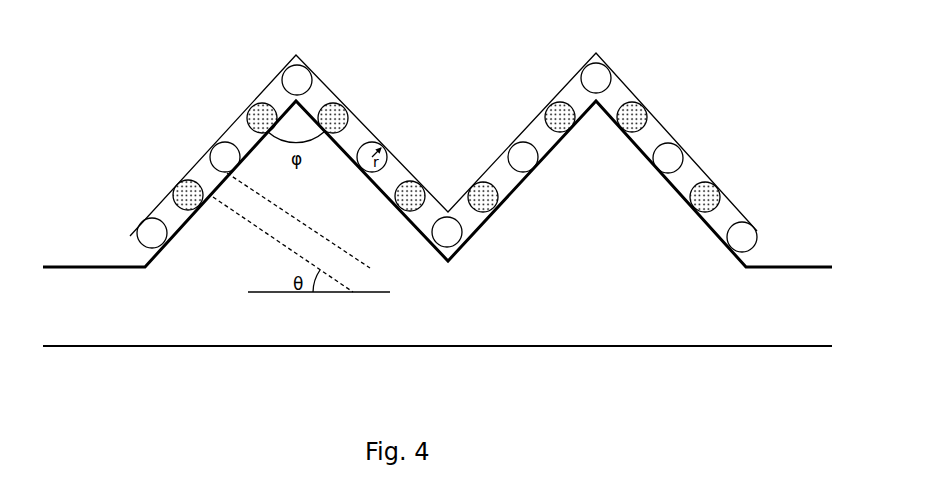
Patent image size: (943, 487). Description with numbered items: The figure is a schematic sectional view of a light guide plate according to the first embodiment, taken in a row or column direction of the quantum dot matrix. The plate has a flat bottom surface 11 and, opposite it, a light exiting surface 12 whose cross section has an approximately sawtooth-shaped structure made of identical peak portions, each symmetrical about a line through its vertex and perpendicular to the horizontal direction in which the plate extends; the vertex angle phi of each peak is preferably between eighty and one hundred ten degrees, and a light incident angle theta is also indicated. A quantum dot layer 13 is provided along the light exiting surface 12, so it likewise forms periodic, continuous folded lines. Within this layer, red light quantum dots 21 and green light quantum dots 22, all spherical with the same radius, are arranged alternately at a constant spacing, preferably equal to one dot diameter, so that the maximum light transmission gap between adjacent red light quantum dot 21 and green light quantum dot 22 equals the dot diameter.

The bottom surface 11 is at (570, 347).
The light exiting surface 12 is at (797, 266).
The quantum dot layer 13 is at (730, 212).
The red light quantum dot 21 is at (299, 70).
The green light quantum dot 22 is at (345, 112).